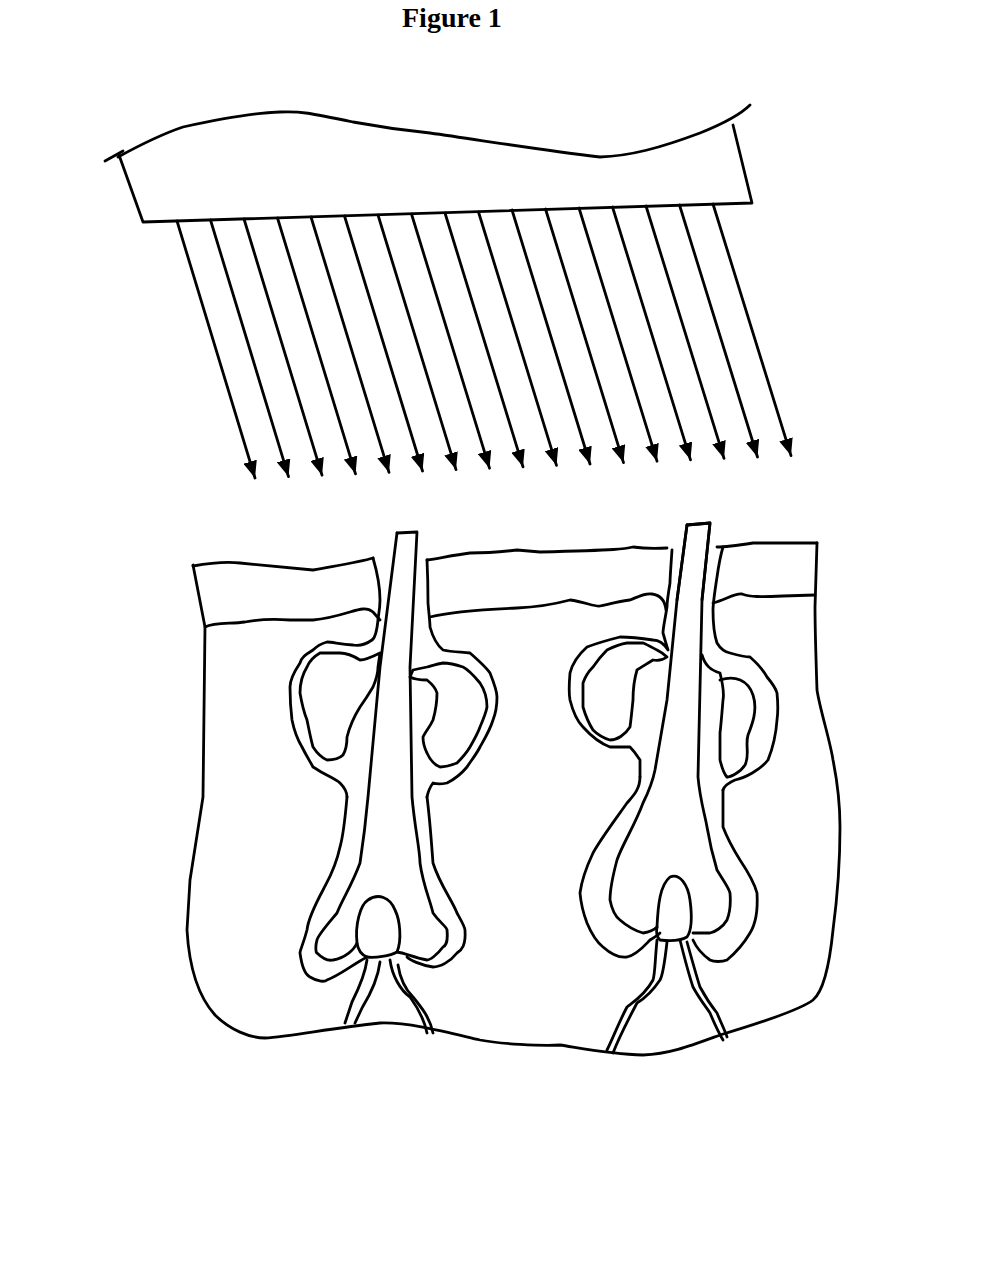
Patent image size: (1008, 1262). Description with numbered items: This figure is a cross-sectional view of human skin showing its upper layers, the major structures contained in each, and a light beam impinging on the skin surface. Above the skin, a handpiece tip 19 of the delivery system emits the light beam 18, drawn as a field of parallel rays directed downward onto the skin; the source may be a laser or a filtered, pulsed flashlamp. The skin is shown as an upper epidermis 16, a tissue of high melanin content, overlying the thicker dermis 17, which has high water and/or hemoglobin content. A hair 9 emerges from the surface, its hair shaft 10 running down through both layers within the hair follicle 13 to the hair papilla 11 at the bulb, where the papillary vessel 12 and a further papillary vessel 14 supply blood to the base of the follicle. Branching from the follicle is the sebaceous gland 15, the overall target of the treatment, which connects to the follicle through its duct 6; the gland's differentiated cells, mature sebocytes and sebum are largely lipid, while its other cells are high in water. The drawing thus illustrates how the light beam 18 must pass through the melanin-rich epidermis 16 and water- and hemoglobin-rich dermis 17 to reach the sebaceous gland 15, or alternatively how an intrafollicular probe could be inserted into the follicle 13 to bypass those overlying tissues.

The handpiece tip 19 is at (717, 167).
The light beam 18 is at (243, 367).
The dermis 17 is at (237, 760).
The epidermis 16 is at (235, 605).
The hair shaft 10 is at (700, 543).
The hair 9 is at (668, 528).
The sebaceous gland duct 6 is at (655, 656).
The hair follicle 13 is at (760, 657).
The sebaceous gland 15 is at (743, 705).
The hair papilla 11 is at (677, 830).
The papillary vessel 12 is at (667, 910).
The papillary vessel 14 is at (620, 1013).